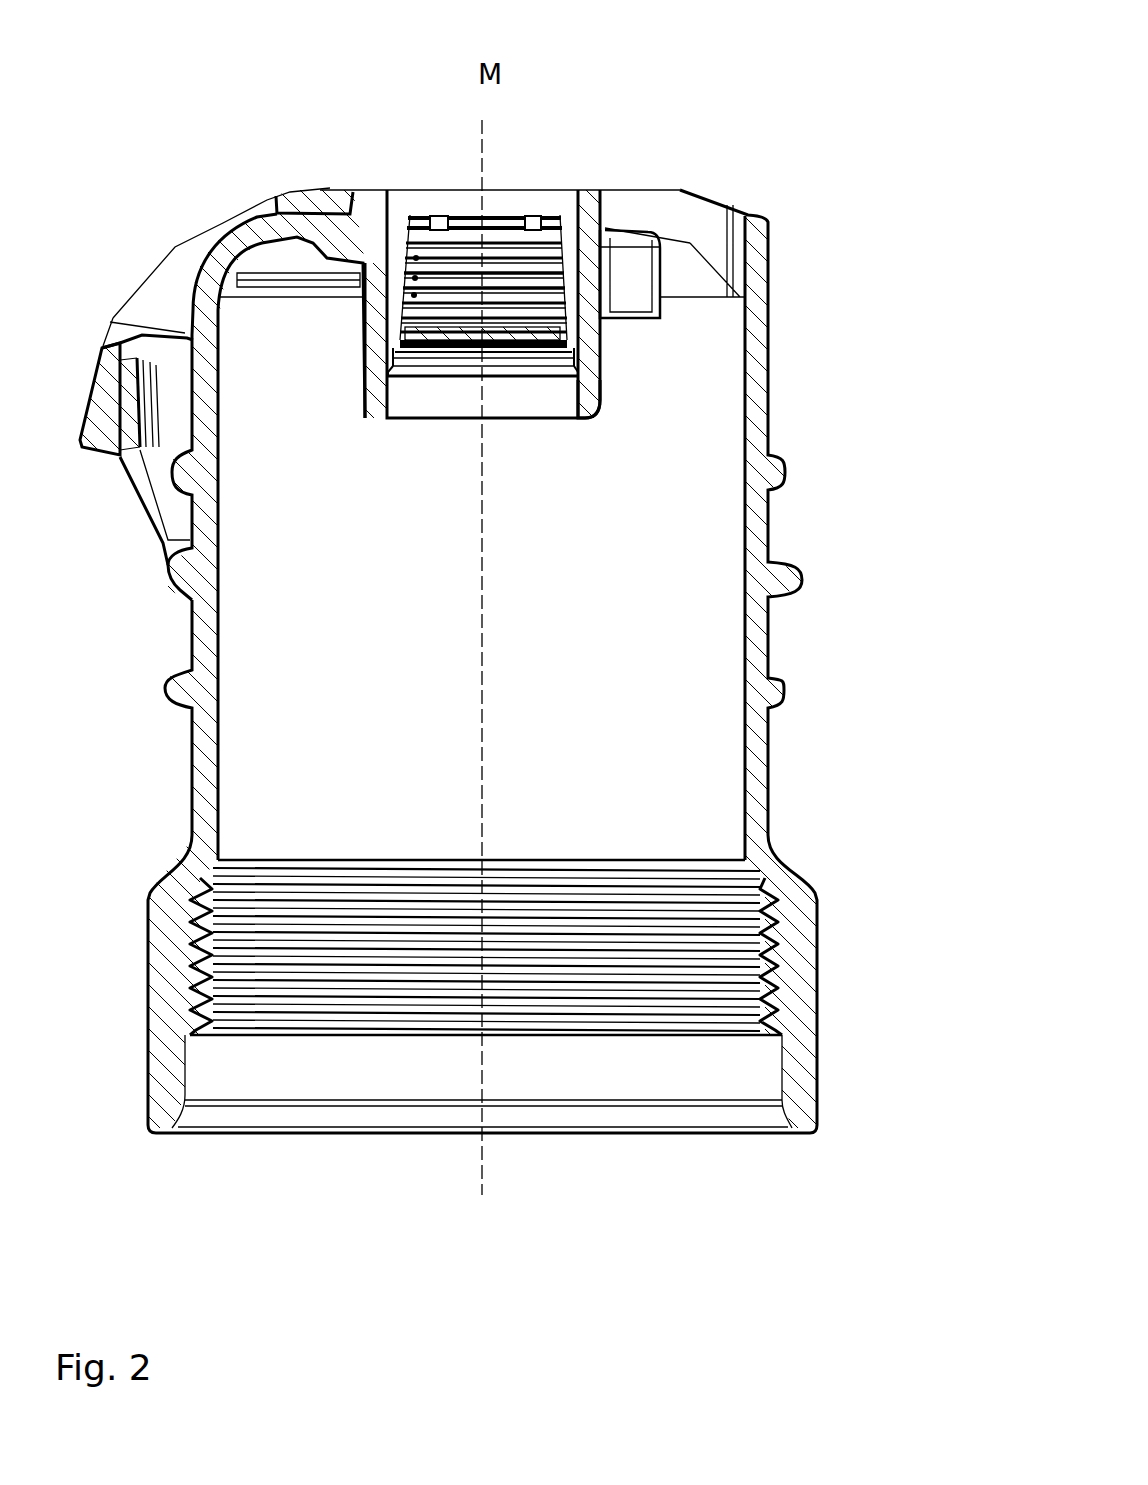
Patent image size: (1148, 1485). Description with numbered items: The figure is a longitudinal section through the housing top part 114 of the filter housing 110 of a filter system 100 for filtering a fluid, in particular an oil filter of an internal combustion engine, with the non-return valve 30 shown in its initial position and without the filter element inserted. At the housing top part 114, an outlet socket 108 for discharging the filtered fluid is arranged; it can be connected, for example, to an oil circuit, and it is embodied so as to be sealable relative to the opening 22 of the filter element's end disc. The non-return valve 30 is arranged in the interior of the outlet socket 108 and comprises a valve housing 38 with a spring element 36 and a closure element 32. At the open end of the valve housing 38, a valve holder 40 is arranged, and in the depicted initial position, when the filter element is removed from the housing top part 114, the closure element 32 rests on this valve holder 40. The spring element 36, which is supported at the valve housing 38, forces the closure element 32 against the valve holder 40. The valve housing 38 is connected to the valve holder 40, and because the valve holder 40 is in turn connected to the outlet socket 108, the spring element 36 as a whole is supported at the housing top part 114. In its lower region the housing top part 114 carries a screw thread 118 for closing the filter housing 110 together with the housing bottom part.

The filter system 100 is at (738, 108).
The filter housing 110 is at (760, 262).
The housing top part 114 is at (748, 659).
The opening 22 is at (578, 222).
The outlet socket 108 is at (598, 410).
The valve housing 38 is at (409, 240).
The spring element 36 is at (427, 283).
The closure element 32 is at (410, 338).
The valve holder 40 is at (578, 363).
The non-return valve 30 is at (510, 377).
The screw thread 118 is at (775, 965).